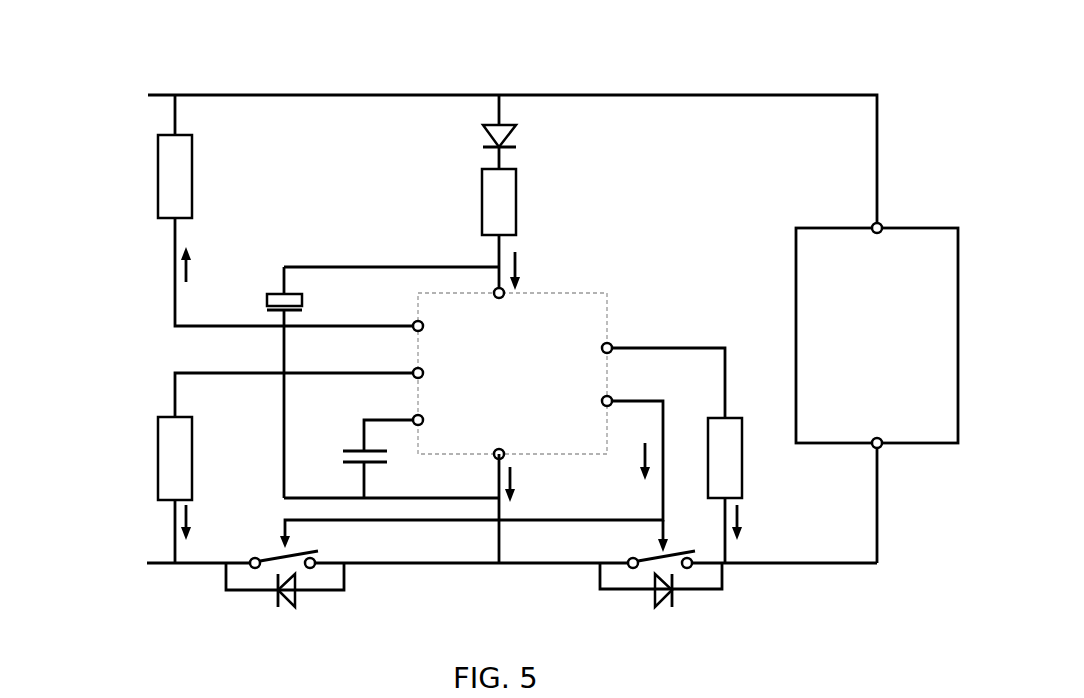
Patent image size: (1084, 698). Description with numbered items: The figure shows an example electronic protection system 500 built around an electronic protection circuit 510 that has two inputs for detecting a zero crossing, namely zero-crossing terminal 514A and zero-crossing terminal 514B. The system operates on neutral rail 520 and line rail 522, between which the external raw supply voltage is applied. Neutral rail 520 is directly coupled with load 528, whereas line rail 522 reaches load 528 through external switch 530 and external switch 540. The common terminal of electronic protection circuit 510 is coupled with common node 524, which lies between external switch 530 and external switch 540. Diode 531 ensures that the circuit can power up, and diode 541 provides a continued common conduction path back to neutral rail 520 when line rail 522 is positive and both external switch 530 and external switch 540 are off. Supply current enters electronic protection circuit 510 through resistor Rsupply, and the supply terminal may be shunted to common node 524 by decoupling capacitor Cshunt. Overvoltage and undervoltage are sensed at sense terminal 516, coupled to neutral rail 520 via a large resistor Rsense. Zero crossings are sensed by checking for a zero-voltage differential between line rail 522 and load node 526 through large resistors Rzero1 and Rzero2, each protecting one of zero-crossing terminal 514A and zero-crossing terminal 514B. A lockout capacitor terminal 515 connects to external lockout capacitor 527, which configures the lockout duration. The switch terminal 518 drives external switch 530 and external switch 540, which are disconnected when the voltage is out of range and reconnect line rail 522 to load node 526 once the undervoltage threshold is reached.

The electronic protection system 500 is at (172, 40).
The electronic protection circuit 510 is at (597, 293).
The zero-crossing terminal 514A is at (413, 365).
The zero-crossing terminal 514B is at (613, 338).
The lockout capacitor terminal 515 is at (413, 413).
The sense terminal 516 is at (413, 318).
The switch terminal 518 is at (613, 390).
The neutral rail 520 is at (180, 90).
The line rail 522 is at (158, 570).
The common node 524 is at (472, 570).
The load node 526 is at (770, 570).
The external lockout capacitor 527 is at (374, 468).
The load 528 is at (877, 393).
The external switch 530 is at (300, 556).
The diode 531 is at (305, 601).
The external switch 540 is at (623, 548).
The diode 541 is at (683, 602).